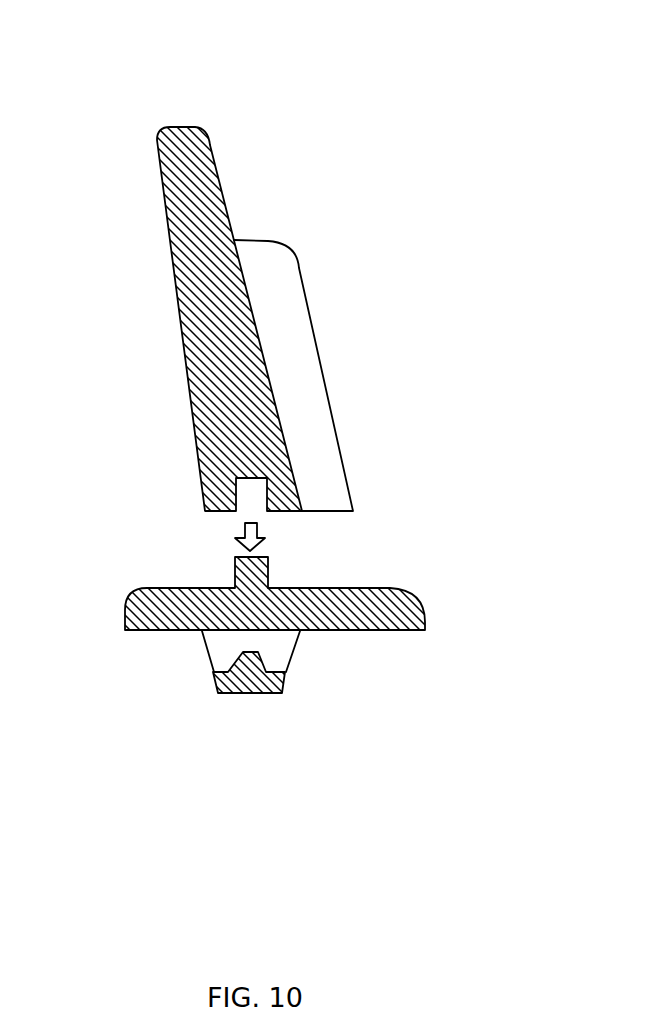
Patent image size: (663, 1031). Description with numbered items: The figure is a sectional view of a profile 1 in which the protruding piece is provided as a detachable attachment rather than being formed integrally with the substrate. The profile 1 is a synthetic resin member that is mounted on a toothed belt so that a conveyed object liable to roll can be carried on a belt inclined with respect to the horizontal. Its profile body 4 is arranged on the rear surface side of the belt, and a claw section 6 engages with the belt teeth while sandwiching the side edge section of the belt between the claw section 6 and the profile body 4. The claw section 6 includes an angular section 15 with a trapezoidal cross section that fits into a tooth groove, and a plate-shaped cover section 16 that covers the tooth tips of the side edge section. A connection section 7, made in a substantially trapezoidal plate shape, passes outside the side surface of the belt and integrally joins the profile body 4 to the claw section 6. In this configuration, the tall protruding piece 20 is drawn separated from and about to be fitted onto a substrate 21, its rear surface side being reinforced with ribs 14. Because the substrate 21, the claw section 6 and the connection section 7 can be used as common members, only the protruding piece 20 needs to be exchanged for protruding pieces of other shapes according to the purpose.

The profile 1 is at (357, 133).
The profile body 4 is at (407, 418).
The claw section 6 is at (243, 707).
The connection section 7 is at (278, 653).
The rib 14 is at (293, 328).
The angular section 15 is at (237, 652).
The cover section 16 is at (285, 688).
The protruding piece 20 is at (186, 160).
The substrate 21 is at (375, 598).